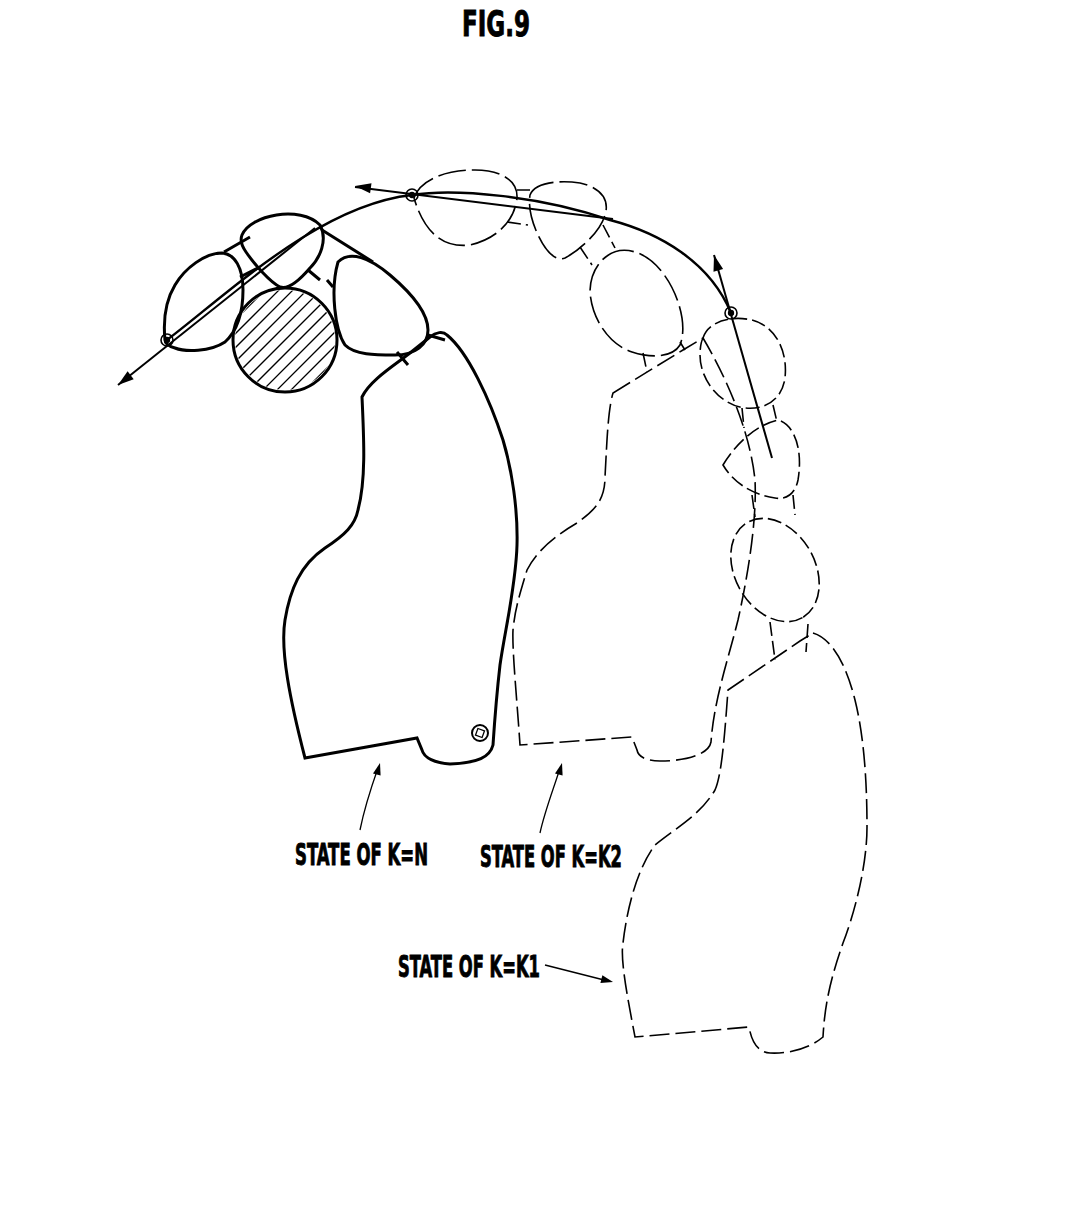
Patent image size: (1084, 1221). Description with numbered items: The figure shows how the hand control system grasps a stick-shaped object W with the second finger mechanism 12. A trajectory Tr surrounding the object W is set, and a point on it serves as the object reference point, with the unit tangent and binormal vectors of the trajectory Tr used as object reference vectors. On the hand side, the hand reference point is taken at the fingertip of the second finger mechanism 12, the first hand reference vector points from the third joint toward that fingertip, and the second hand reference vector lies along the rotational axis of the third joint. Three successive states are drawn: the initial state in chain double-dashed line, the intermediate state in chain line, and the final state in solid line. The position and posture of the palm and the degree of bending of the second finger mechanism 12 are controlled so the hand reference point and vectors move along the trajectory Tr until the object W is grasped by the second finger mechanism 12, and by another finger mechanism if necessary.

The second finger mechanism 12 is at (259, 205).
The trajectory Tr is at (652, 230).
The object W is at (298, 352).